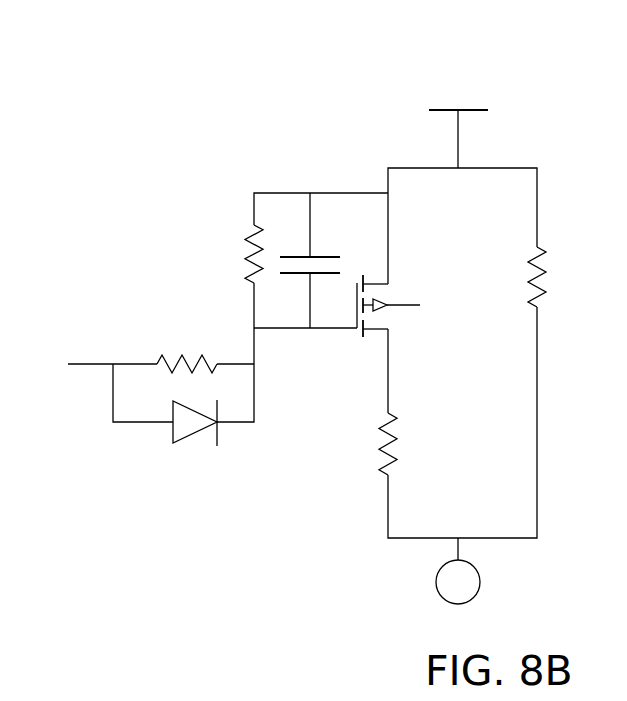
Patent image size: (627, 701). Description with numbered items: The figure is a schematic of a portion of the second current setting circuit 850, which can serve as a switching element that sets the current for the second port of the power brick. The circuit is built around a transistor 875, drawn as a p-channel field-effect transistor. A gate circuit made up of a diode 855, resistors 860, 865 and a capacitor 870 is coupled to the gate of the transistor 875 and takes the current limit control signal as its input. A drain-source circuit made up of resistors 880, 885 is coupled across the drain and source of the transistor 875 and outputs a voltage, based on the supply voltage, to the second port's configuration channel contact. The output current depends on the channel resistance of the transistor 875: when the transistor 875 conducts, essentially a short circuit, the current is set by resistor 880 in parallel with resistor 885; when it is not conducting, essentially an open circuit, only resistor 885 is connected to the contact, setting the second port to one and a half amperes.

The second current setting circuit 850 is at (342, 48).
The diode 855 is at (185, 446).
The resistor 860 is at (183, 347).
The resistor 865 is at (246, 235).
The capacitor 870 is at (299, 255).
The transistor 875 is at (362, 342).
The resistor 880 is at (376, 457).
The resistor 885 is at (545, 298).